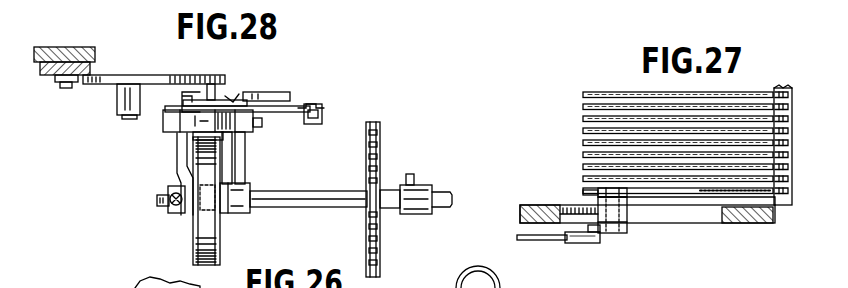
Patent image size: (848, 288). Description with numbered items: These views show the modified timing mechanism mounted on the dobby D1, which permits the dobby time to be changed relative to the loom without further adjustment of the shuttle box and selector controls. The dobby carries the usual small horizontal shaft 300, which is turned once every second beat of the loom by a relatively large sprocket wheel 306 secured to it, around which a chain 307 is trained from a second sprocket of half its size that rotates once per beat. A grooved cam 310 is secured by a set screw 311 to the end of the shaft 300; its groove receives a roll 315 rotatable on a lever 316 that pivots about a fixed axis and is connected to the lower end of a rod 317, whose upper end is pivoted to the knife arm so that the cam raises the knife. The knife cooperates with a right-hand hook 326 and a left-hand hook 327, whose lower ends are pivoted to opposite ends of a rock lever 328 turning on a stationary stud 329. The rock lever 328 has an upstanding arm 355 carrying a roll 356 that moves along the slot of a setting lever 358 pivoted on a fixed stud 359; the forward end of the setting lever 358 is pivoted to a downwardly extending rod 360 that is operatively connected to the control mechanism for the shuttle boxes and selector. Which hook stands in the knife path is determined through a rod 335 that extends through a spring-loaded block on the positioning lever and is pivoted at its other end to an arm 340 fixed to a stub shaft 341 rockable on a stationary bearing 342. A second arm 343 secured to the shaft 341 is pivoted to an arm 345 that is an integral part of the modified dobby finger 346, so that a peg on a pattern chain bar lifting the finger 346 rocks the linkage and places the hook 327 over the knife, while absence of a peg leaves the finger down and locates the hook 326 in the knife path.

In FIG. 28, the horizontal shaft 300 is at (322, 203).
In FIG. 28, the sprocket wheel 306 is at (381, 168).
In FIG. 28, the chain 307 is at (381, 258).
In FIG. 28, the cam 310 is at (200, 223).
In FIG. 28, the set screw 311 is at (236, 212).
In FIG. 28, the roll 315 is at (166, 190).
In FIG. 28, the lever 316 is at (184, 160).
In FIG. 28, the rod 317 is at (160, 201).
In FIG. 28, the right-hand hook 326 is at (268, 100).
In FIG. 28, the left-hand hook 327 is at (185, 112).
In FIG. 28, the rock lever 328 is at (228, 118).
In FIG. 28, the stationary stud 329 is at (183, 131).
In FIG. 28, the upstanding arm 355 is at (236, 132).
In FIG. 28, the roll 356 is at (234, 91).
In FIG. 28, the setting lever 358 is at (292, 112).
In FIG. 28, the fixed stud 359 is at (125, 118).
In FIG. 28, the rod 360 is at (318, 126).
In FIG. 27, the rod 335 is at (548, 246).
In FIG. 27, the arm 340 is at (595, 244).
In FIG. 27, the stub shaft 341 is at (626, 237).
In FIG. 27, the stationary bearing 342 is at (697, 209).
In FIG. 27, the second arm 343 is at (597, 193).
In FIG. 27, the arm 345 is at (614, 187).
In FIG. 27, the dobby finger 346 is at (781, 197).
In FIG. 27, the dobby D1 is at (745, 215).